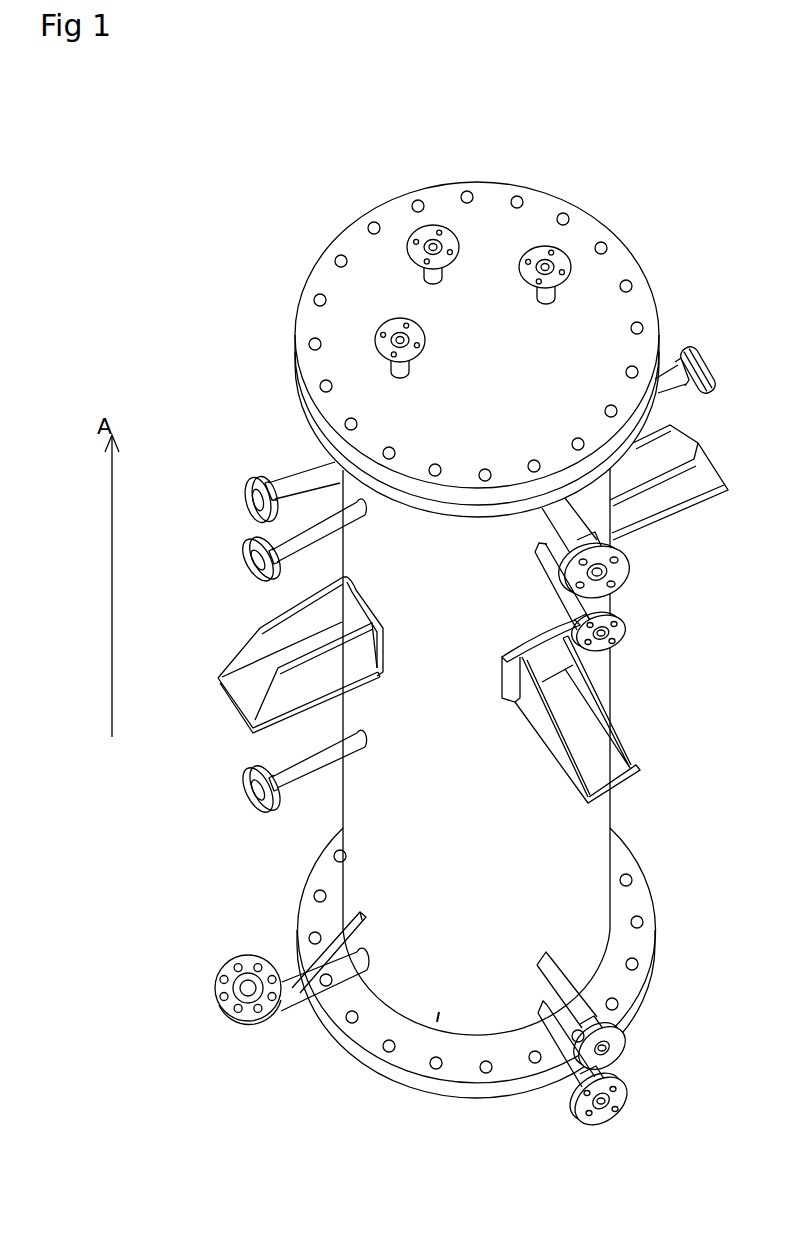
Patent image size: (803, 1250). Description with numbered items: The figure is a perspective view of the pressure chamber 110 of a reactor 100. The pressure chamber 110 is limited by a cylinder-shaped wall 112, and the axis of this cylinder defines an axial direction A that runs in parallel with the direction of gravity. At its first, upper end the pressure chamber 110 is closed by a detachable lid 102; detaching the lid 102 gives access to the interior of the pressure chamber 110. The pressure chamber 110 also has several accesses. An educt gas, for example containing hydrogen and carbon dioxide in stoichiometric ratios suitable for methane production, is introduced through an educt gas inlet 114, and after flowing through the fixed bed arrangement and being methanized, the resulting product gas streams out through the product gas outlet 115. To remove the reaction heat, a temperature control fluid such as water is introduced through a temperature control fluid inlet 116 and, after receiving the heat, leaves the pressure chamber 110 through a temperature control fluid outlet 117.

The reactor 100 is at (286, 221).
The detachable lid 102 is at (413, 192).
The pressure chamber 110 is at (612, 812).
The cylinder-shaped wall 112 is at (612, 667).
The educt gas inlet 114 is at (453, 232).
The product gas outlet 115 is at (245, 556).
The temperature control fluid inlet 116 is at (615, 1080).
The temperature control fluid outlet 117 is at (632, 557).